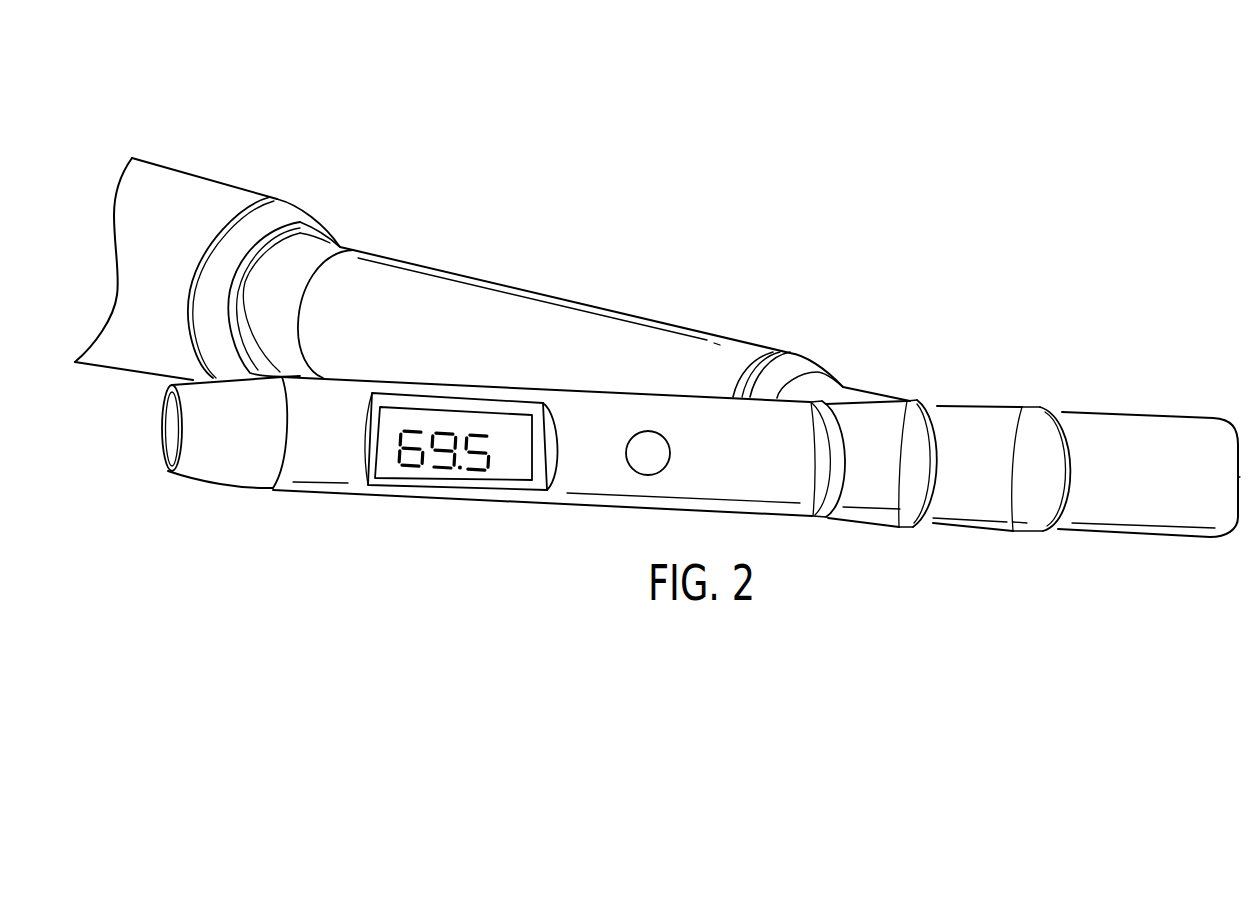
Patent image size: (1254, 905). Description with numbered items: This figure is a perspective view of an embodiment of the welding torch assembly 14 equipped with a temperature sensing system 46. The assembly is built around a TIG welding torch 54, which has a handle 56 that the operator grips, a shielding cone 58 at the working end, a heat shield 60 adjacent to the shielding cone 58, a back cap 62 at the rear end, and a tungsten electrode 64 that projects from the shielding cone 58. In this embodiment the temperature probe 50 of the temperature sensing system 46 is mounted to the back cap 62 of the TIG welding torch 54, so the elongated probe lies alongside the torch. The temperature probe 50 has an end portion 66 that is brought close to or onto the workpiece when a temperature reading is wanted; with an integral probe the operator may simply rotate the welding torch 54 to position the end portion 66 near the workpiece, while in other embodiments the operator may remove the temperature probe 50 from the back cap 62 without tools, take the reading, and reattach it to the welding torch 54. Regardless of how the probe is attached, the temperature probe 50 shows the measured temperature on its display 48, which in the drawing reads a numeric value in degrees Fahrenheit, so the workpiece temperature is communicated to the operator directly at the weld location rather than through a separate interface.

The welding torch assembly 14 is at (659, 366).
The temperature sensing system 46 is at (534, 516).
The display 48 is at (456, 476).
The temperature probe 50 is at (593, 481).
The TIG welding torch 54 is at (848, 380).
The handle 56 is at (412, 277).
The shielding cone 58 is at (1132, 428).
The heat shield 60 is at (1030, 422).
The back cap 62 is at (873, 418).
The tungsten electrode 64 is at (1240, 477).
The end portion 66 is at (153, 424).